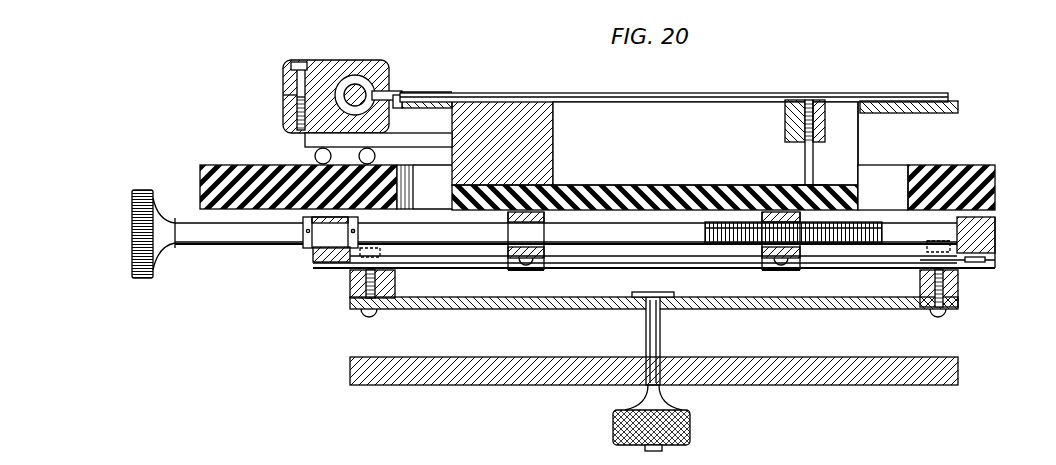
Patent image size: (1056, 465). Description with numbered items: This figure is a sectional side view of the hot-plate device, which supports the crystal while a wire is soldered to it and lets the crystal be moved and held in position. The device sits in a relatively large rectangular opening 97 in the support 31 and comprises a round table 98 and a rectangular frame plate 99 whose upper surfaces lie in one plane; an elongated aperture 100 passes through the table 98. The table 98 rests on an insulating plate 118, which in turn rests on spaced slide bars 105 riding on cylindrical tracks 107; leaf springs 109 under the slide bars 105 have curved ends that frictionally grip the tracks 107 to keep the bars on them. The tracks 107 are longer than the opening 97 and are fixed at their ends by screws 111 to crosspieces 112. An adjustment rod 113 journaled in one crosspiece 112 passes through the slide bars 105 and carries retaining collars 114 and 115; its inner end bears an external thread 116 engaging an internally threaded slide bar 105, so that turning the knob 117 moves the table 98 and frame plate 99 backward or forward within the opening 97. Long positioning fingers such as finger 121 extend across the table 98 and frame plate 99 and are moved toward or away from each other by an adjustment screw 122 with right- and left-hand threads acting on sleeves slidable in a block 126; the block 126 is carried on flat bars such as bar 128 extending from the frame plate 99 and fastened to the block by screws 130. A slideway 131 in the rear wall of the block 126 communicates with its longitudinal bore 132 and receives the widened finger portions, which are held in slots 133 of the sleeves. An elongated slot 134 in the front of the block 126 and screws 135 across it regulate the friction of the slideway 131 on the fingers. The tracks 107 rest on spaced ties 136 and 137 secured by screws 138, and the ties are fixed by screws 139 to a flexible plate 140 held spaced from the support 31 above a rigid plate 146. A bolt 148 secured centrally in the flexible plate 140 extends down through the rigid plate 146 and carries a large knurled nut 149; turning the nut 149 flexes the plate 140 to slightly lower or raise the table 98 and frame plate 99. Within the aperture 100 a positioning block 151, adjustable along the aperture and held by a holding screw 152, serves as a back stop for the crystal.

The support 31 is at (238, 167).
The rectangular opening 97 is at (886, 175).
The round table 98 is at (528, 108).
The frame plate 99 is at (952, 101).
The elongated aperture 100 is at (622, 118).
The slide bars 105 is at (783, 212).
The tracks 107 is at (453, 265).
The leaf springs 109 is at (537, 268).
The screws 111 is at (980, 265).
The crosspieces 112 is at (333, 256).
The adjustment rod 113 is at (223, 236).
The retaining collar 114 is at (303, 248).
The retaining collar 115 is at (358, 230).
The external thread 116 is at (852, 246).
The knob 117 is at (143, 190).
The insulating plate 118 is at (618, 190).
The positioning finger 121 is at (420, 93).
The adjustment screw 122 is at (355, 80).
The block 126 is at (316, 60).
The flat bar 128 is at (432, 120).
The screws 130 is at (315, 154).
The slideway 131 is at (400, 92).
The longitudinal bore 132 is at (376, 90).
The slots 133 is at (375, 105).
The elongated slot 134 is at (284, 96).
The screws 135 is at (299, 62).
The tie 136 is at (388, 283).
The tie 137 is at (955, 282).
The screws 138 is at (356, 290).
The screws 139 is at (373, 315).
The flexible plate 140 is at (468, 311).
The rigid plate 146 is at (958, 372).
The bolt 148 is at (660, 338).
The knurled nut 149 is at (690, 428).
The positioning block 151 is at (800, 115).
The holding screw 152 is at (812, 172).